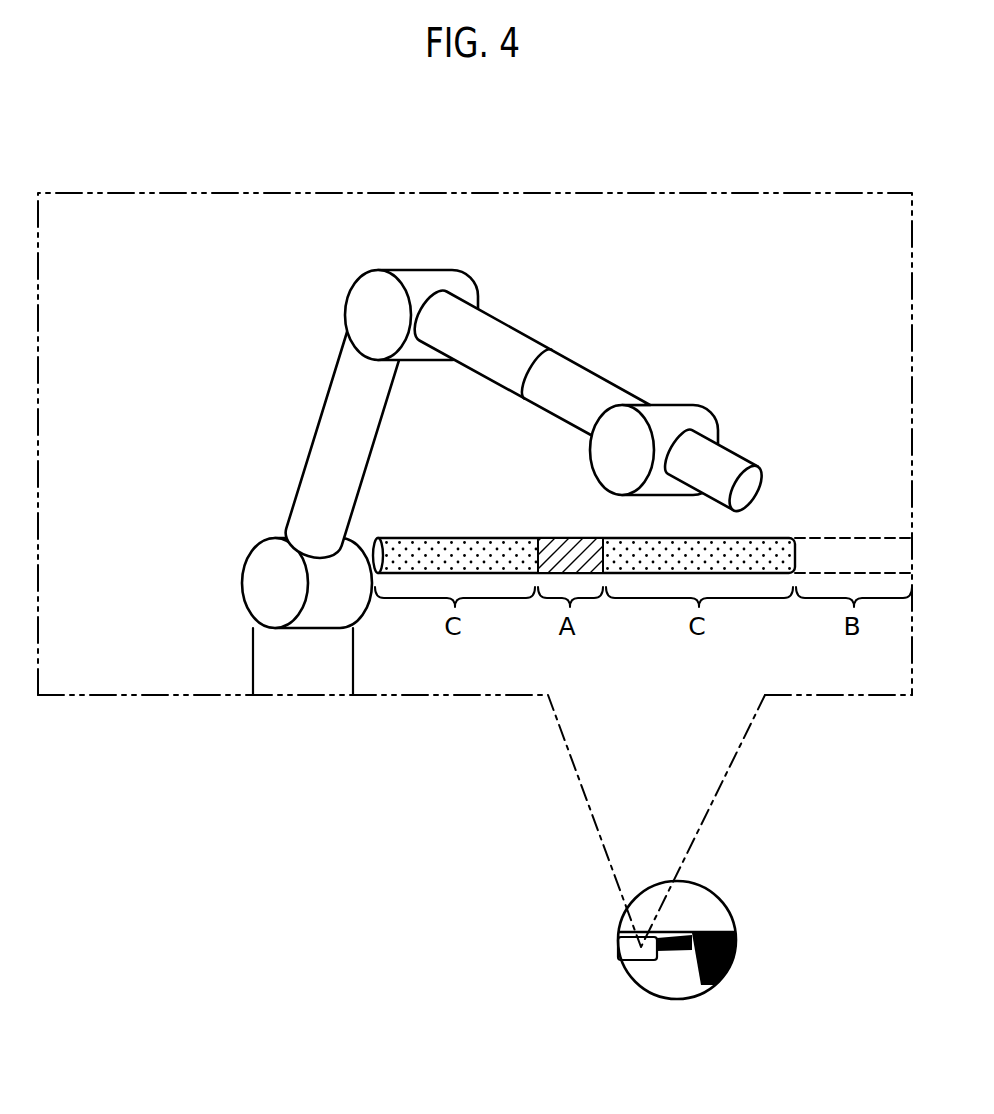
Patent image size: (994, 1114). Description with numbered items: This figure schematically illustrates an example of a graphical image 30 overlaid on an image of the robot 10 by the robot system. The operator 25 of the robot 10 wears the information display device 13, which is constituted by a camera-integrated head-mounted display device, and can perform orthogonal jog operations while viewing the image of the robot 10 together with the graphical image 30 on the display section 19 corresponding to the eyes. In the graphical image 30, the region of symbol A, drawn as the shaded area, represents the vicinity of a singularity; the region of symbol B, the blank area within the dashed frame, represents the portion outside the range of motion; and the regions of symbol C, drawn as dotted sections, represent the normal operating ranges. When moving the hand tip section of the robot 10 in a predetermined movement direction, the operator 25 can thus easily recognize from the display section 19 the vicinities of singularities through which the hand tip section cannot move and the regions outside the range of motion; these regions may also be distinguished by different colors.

The robot 10 is at (318, 423).
The graphical image 30 is at (488, 534).
The display section 19 is at (403, 670).
The operator 25 is at (722, 892).
The information display device 13 is at (673, 960).